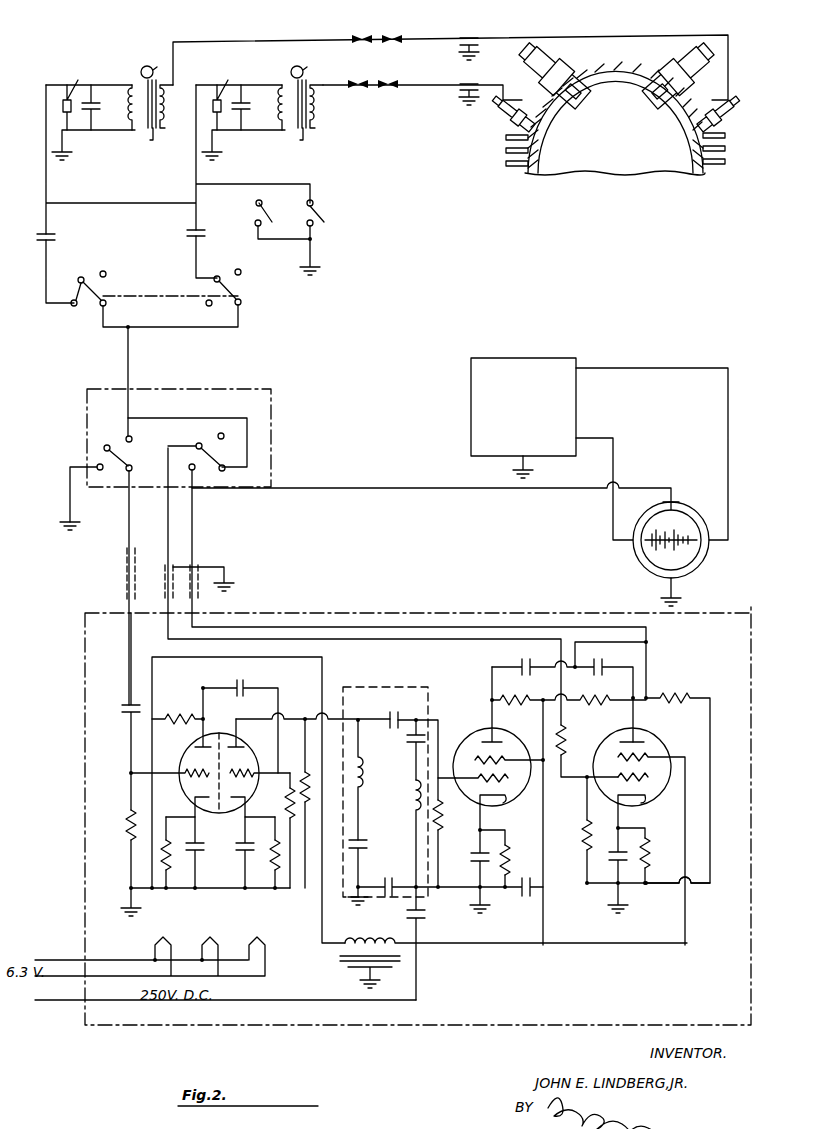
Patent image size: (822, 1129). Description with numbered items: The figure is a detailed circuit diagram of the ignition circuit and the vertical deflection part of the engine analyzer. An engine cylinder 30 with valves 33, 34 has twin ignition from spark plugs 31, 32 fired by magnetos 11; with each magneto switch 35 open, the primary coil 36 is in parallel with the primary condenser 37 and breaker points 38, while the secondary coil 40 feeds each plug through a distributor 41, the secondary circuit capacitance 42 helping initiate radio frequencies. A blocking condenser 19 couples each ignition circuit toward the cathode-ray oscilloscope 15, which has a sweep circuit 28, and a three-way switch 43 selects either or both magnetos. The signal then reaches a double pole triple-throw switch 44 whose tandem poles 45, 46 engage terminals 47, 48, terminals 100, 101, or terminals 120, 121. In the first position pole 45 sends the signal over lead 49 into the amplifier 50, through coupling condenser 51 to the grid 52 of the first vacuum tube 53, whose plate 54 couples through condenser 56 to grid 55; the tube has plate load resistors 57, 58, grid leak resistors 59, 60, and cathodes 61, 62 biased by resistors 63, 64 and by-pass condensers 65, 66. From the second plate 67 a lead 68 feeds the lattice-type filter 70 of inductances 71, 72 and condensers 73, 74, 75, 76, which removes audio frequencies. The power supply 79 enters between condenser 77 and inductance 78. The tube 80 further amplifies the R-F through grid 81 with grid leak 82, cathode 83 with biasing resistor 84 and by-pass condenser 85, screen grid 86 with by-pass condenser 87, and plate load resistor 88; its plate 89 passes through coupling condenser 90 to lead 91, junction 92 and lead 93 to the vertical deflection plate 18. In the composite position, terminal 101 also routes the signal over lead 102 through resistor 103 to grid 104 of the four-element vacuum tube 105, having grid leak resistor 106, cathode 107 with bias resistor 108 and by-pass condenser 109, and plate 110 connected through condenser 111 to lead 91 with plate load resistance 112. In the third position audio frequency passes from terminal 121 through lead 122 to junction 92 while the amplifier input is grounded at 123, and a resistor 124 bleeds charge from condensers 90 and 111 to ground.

The magneto 11 is at (226, 109).
The cathode-ray oscilloscope 15 is at (686, 515).
The vertical deflection plate 18 is at (671, 500).
The blocking condenser 19 is at (58, 236).
The sweep circuit 28 is at (548, 358).
The engine cylinder 30 is at (656, 175).
The spark plug 31 is at (519, 126).
The spark plug 32 is at (719, 121).
The valve 33 is at (578, 108).
The valve 34 is at (660, 106).
The magneto switch 35 is at (268, 203).
The primary coil 36 is at (128, 122).
The primary condenser 37 is at (173, 107).
The breaker points 38 is at (70, 88).
The secondary coil 40 is at (160, 110).
The distributor 41 is at (371, 36).
The secondary circuit capacitance 42 is at (481, 36).
The three-way switch 43 is at (101, 289).
The double pole triple-throw switch 44 is at (180, 410).
The pole 45 is at (120, 461).
The pole 46 is at (212, 455).
The terminal 47 is at (127, 438).
The terminal 48 is at (218, 435).
The lead 49 is at (129, 538).
The amplifier 50 is at (85, 634).
The coupling condenser 51 is at (124, 702).
The grid 52 is at (188, 768).
The first vacuum tube 53 is at (209, 724).
The plate 54 is at (194, 739).
The grid 55 is at (240, 768).
The condenser 56 is at (245, 678).
The plate load resistor 57 is at (178, 716).
The plate load resistor 58 is at (308, 788).
The grid leak resistor 59 is at (125, 828).
The grid leak resistor 60 is at (285, 798).
The cathode 61 is at (190, 798).
The cathode 62 is at (234, 810).
The resistor 63 is at (168, 846).
The resistor 64 is at (268, 860).
The by-pass condenser 65 is at (198, 856).
The by-pass condenser 66 is at (244, 852).
The second plate 67 is at (237, 746).
The lead 68 is at (288, 717).
The lattice-type filter 70 is at (384, 686).
The inductance 71 is at (366, 777).
The inductance 72 is at (410, 806).
The condenser 73 is at (404, 713).
The condenser 74 is at (407, 746).
The condenser 75 is at (370, 839).
The condenser 76 is at (390, 878).
The condenser 77 is at (426, 926).
The inductance 78 is at (363, 938).
The power supply 79 is at (68, 1006).
The vacuum tube 80 is at (484, 734).
The grid 81 is at (475, 788).
The grid leak 82 is at (441, 834).
The cathode 83 is at (504, 804).
The biasing resistor 84 is at (506, 847).
The by-pass condenser 85 is at (472, 864).
The screen grid 86 is at (510, 756).
The by-pass condenser 87 is at (524, 904).
The plate load resistor 88 is at (518, 686).
The plate 89 is at (495, 740).
The coupling condenser 90 is at (527, 662).
The lead 91 is at (646, 624).
The junction 92 is at (198, 494).
The lead 93 is at (412, 490).
The terminal 100 is at (103, 438).
The terminal 101 is at (196, 444).
The lead 102 is at (168, 517).
The resistor 103 is at (568, 742).
The grid 104 is at (650, 790).
The four-element vacuum tube 105 is at (670, 746).
The grid leak resistor 106 is at (586, 844).
The cathode 107 is at (632, 802).
The bias resistor 108 is at (647, 864).
The by-pass condenser 109 is at (605, 870).
The plate 110 is at (640, 742).
The condenser 111 is at (602, 664).
The plate load resistance 112 is at (592, 698).
The terminal 120 is at (96, 466).
The terminal 121 is at (202, 481).
The lead 122 is at (183, 476).
The ground 123 is at (62, 521).
The resistor 124 is at (682, 696).